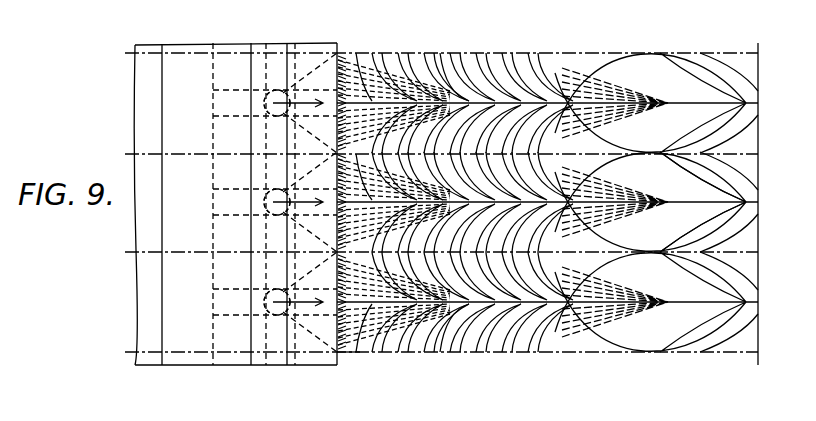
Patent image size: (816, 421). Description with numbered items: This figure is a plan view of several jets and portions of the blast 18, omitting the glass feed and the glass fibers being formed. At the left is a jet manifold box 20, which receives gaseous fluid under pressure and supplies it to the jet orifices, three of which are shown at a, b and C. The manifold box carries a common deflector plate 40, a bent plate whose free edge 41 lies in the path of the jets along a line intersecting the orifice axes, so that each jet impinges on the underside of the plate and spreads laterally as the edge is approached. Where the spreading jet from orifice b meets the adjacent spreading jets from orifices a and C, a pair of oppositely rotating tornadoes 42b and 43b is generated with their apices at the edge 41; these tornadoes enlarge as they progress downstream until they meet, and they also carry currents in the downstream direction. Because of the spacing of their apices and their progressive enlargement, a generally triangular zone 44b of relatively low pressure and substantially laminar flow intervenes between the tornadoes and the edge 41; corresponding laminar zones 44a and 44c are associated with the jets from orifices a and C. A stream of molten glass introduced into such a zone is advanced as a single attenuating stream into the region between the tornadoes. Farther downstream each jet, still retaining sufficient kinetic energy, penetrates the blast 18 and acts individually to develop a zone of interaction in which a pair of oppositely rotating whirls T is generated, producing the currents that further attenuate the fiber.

The blast 18 is at (541, 53).
The jet manifold box 20 is at (135, 93).
The deflector plate 40 is at (307, 55).
The free edge 41 is at (362, 352).
The tornado 42b is at (440, 280).
The tornado 43b is at (428, 155).
The zone of laminar flow 44a is at (368, 302).
The triangular zone 44b is at (338, 152).
The triangular laminar zone 44c is at (360, 103).
The jet orifice C is at (267, 115).
The jet orifice b is at (268, 216).
The jet orifice a is at (270, 316).
The whirl T is at (712, 168).